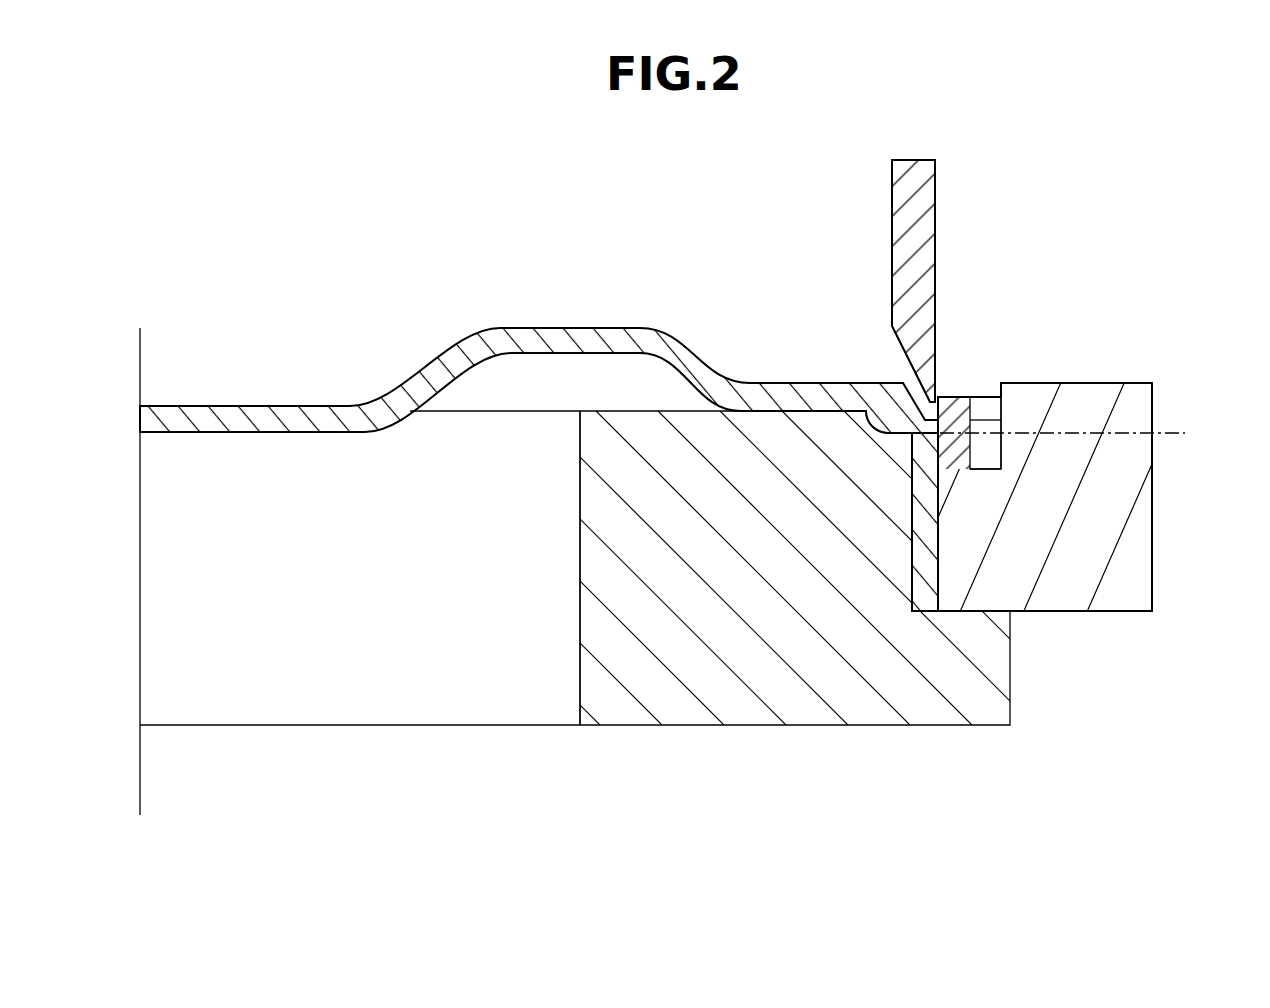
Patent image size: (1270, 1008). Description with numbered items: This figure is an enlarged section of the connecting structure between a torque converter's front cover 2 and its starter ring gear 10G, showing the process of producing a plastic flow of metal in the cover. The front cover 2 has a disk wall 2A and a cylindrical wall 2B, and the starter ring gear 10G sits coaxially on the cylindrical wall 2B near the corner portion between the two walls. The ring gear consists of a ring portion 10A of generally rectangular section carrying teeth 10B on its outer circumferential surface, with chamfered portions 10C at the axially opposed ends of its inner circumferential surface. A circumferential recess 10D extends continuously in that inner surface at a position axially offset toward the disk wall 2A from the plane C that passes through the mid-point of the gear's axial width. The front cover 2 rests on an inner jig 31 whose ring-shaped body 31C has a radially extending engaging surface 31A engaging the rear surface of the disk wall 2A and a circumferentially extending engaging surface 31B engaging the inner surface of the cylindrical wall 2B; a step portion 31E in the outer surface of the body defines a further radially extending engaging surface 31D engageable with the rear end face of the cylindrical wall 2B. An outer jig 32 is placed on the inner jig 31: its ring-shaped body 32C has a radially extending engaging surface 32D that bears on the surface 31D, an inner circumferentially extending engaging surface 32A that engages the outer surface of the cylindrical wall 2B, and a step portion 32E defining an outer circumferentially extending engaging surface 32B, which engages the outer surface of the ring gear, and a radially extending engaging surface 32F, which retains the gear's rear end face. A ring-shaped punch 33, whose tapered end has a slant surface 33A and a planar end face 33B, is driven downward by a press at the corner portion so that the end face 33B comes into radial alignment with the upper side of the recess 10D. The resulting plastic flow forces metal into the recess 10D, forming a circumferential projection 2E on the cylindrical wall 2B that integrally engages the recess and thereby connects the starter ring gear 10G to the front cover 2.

The front cover 2 is at (301, 418).
The disk wall 2A is at (818, 381).
The cylindrical wall 2B is at (997, 622).
The circumferential projection 2E is at (940, 418).
The ring portion 10A is at (979, 384).
The teeth 10B is at (987, 428).
The chamfered portions 10C is at (948, 397).
The circumferential recess 10D is at (896, 420).
The starter ring gear 10G is at (953, 397).
The inner jig 31 is at (660, 750).
The radially extending engaging surface 31A is at (780, 410).
The circumferentially extending engaging surface 31B is at (915, 535).
The ring-shaped body 31C is at (787, 705).
The radially extending engaging surface 31D is at (947, 603).
The step portion 31E is at (970, 613).
The outer jig 32 is at (1128, 626).
The inner circumferentially extending engaging surface 32A is at (938, 523).
The outer circumferentially extending engaging surface 32B is at (990, 397).
The ring-shaped body 32C is at (1130, 578).
The radially extending engaging surface 32D is at (1011, 688).
The step portion 32E is at (985, 478).
The radially extending engaging surface 32F is at (1002, 447).
The punch 33 is at (930, 190).
The slant surface 33A is at (900, 352).
The planar end face 33B is at (916, 402).
The plane C is at (1077, 439).